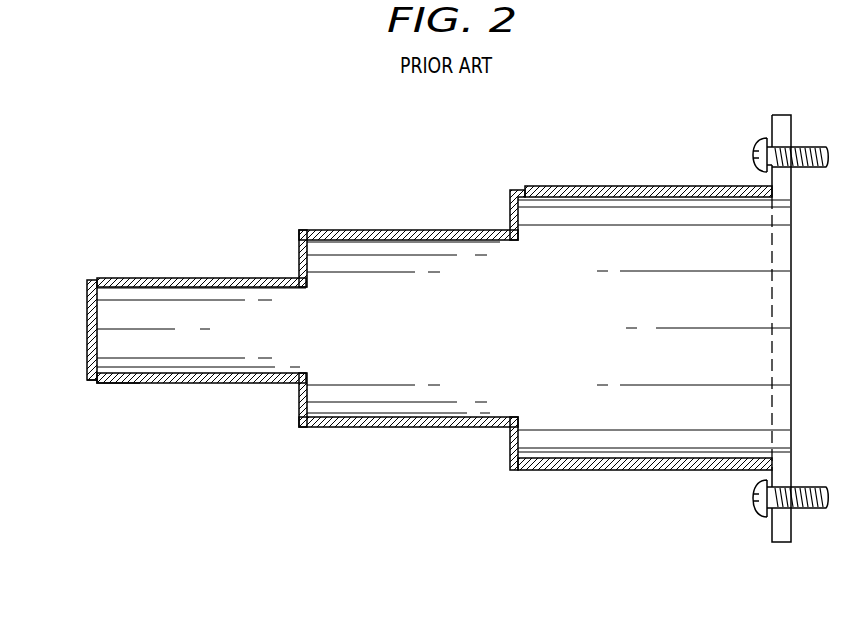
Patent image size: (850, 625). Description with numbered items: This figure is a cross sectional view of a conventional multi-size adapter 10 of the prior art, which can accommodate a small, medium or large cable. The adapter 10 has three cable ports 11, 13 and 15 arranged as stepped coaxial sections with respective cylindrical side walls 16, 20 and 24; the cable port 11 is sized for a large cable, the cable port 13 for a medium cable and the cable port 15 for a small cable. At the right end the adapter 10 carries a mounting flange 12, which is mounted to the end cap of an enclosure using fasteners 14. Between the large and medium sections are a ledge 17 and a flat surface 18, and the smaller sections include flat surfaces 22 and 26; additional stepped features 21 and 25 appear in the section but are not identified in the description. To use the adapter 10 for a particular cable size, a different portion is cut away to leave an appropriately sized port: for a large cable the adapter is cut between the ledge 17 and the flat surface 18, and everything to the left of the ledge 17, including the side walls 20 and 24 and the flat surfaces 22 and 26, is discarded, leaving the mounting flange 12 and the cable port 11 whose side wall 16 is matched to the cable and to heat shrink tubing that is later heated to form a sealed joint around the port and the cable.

The multi-size adapter 10 is at (428, 526).
The cable port 11 is at (636, 473).
The mounting flange 12 is at (771, 128).
The cable port 13 is at (424, 430).
The fasteners 14 is at (752, 148).
The cable port 15 is at (212, 386).
The cylindrical side wall 16 is at (581, 185).
The ledge 17 is at (516, 471).
The flat surface 18 is at (509, 208).
The cylindrical side wall 20 is at (372, 229).
The lower step wall between small and intermediate sections 21 is at (300, 429).
The flat surface 22 is at (299, 248).
The cylindrical side wall 24 is at (189, 277).
The lower end corner of small section 25 is at (97, 385).
The flat surface 26 is at (86, 295).